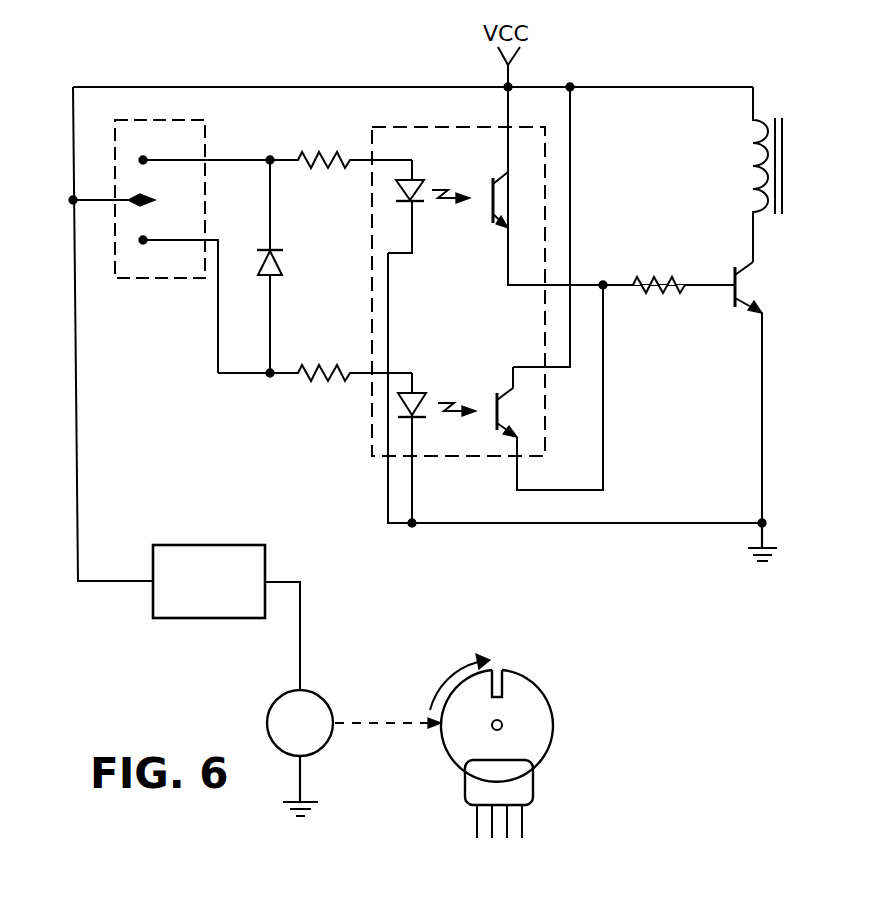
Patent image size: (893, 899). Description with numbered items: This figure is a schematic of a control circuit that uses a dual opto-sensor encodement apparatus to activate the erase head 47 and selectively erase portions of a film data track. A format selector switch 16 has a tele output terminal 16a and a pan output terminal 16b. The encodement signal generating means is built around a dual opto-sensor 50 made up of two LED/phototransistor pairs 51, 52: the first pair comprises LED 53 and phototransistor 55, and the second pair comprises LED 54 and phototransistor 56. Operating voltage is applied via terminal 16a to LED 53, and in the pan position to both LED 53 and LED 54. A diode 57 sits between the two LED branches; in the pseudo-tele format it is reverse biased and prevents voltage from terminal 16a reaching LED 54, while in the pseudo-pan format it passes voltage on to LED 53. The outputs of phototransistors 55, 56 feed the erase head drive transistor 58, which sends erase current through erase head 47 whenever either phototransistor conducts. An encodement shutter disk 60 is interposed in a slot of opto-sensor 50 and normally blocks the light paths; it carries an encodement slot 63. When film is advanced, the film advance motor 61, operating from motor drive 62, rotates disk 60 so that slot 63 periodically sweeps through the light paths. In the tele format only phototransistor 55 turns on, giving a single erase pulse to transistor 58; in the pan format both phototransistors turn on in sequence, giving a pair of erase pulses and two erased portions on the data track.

The selector switch 16 is at (163, 120).
The selector switch output terminal 16a is at (143, 160).
The selector switch output terminal 16b is at (143, 240).
The erase head 47 is at (785, 152).
The dual opto-sensor 50 is at (428, 131).
The LED/phototransistor pair 51 is at (464, 230).
The LED/phototransistor pair 52 is at (466, 383).
The LED 53 is at (396, 186).
The LED 54 is at (398, 400).
The phototransistor 55 is at (493, 198).
The phototransistor 56 is at (497, 410).
The diode 57 is at (283, 263).
The erase head drive transistor 58 is at (765, 285).
The shutter disk 60 is at (540, 740).
The film advance motor 61 is at (318, 708).
The motor drive 62 is at (207, 547).
The encodement slot 63 is at (500, 668).